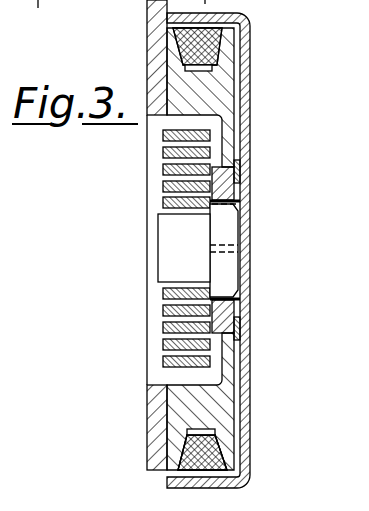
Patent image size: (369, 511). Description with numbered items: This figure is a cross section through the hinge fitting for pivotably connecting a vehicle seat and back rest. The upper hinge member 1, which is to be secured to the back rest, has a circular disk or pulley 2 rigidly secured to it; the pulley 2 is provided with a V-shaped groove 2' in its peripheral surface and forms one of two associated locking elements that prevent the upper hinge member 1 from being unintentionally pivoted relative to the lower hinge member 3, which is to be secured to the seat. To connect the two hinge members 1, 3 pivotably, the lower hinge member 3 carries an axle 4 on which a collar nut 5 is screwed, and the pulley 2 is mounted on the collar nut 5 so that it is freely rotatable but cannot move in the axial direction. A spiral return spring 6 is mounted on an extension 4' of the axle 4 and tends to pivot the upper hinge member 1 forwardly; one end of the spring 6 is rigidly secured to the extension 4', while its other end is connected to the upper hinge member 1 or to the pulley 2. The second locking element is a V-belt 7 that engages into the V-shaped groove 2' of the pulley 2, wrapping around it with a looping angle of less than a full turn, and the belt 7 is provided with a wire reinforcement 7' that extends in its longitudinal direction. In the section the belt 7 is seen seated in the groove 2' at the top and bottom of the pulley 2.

The upper hinge member 1 is at (157, 38).
The circular disk or pulley 2 is at (225, 249).
The V-shaped groove 2' is at (235, 240).
The lower hinge member 3 is at (243, 380).
The axle 4 is at (246, 250).
The extension of the axle 4' is at (156, 248).
The collar nut 5 is at (237, 174).
The spiral return spring 6 is at (165, 160).
The V-belt 7 is at (164, 249).
The wire reinforcement 7' is at (231, 441).